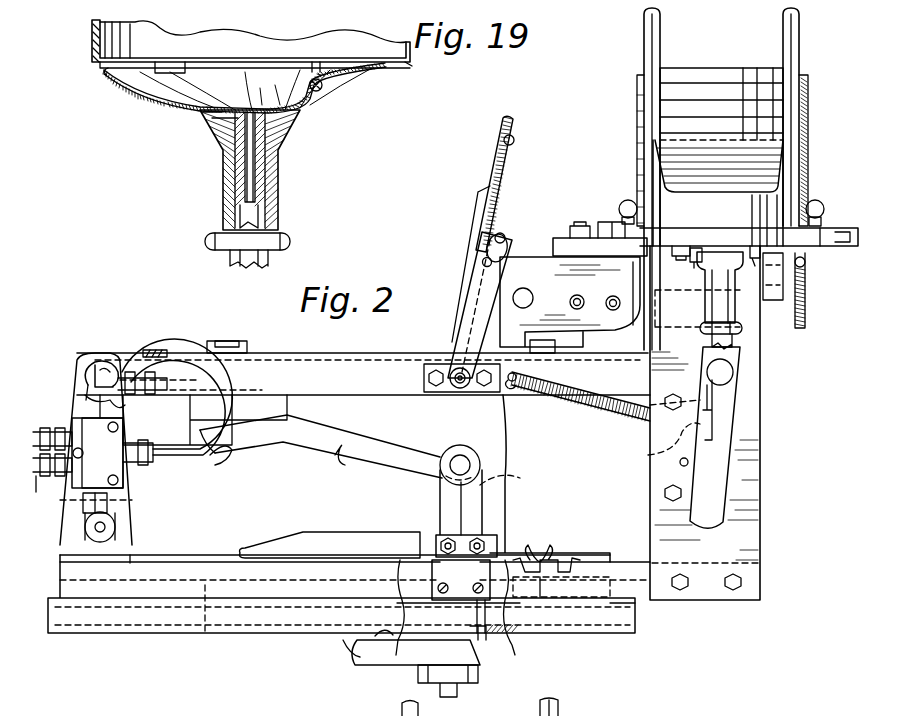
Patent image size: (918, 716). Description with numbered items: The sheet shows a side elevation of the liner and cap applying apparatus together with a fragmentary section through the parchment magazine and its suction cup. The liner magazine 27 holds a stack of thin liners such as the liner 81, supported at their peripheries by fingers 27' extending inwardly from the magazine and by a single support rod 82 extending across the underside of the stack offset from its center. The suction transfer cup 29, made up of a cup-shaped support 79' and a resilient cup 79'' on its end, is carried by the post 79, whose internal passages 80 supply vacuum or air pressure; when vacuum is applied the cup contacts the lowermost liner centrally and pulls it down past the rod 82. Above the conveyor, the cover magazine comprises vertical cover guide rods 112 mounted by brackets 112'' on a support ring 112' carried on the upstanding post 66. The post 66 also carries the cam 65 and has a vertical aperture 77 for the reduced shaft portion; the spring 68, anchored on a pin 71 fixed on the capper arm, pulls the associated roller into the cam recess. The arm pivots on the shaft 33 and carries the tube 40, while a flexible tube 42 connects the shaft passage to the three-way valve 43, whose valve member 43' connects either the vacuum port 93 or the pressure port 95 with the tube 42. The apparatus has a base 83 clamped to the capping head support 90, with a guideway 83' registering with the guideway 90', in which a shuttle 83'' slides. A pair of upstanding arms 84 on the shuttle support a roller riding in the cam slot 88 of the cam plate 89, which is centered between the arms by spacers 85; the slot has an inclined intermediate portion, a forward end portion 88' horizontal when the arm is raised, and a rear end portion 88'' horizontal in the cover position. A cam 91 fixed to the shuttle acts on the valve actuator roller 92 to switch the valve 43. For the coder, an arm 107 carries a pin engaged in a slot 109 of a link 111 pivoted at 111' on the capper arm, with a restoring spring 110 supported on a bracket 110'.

In FIG. 19, the liner magazine 27 is at (225, 48).
In FIG. 2, the liner magazine 27 is at (686, 157).
In FIG. 19, the fingers 27' is at (231, 84).
In FIG. 2, the fingers 27' is at (687, 238).
In FIG. 19, the liner 81 is at (128, 90).
In FIG. 2, the liner 81 is at (756, 254).
In FIG. 19, the support rod 82 is at (322, 89).
In FIG. 2, the support rod 82 is at (691, 256).
In FIG. 19, the suction transfer cup 29 is at (295, 128).
In FIG. 2, the suction transfer cup 29 is at (700, 276).
In FIG. 19, the post 79 is at (290, 170).
In FIG. 19, the cup-shaped support 79' is at (204, 141).
In FIG. 19, the resilient cup 79'' is at (176, 124).
In FIG. 19, the internal passages 80 is at (247, 190).
In FIG. 2, the cover guide rods 112 is at (721, 179).
In FIG. 2, the support ring 112' is at (705, 264).
In FIG. 2, the brackets 112'' is at (748, 151).
In FIG. 2, the upstanding post 66 is at (755, 490).
In FIG. 2, the cam 65 is at (715, 437).
In FIG. 2, the vertical aperture 77 is at (732, 413).
In FIG. 2, the arm 107 is at (533, 270).
In FIG. 2, the restoring spring 110 is at (510, 184).
In FIG. 2, the bracket 110' is at (458, 258).
In FIG. 2, the slot 109 is at (500, 243).
In FIG. 2, the link 111 is at (471, 305).
In FIG. 2, the pivot 111' is at (447, 357).
In FIG. 2, the spring 68 is at (623, 403).
In FIG. 2, the pin 71 is at (509, 384).
In FIG. 2, the tube 40 is at (260, 384).
In FIG. 2, the cam plate 89 is at (504, 416).
In FIG. 2, the spacers 85 is at (453, 445).
In FIG. 2, the cam slot 88 is at (321, 461).
In FIG. 2, the forward end portion 88' is at (515, 472).
In FIG. 2, the rear end portion 88'' is at (218, 473).
In FIG. 2, the upstanding arms 84 is at (482, 506).
In FIG. 2, the base 83 is at (344, 554).
In FIG. 2, the guideway 83' is at (341, 578).
In FIG. 2, the shuttle 83'' is at (436, 581).
In FIG. 2, the cam 91 is at (278, 537).
In FIG. 2, the capping head support 90 is at (445, 671).
In FIG. 2, the guideway 90' is at (652, 618).
In FIG. 2, the three-way valve 43 is at (113, 449).
In FIG. 2, the valve member 43' is at (82, 516).
In FIG. 2, the vacuum inlet port 93 is at (44, 430).
In FIG. 2, the pressure inlet port 95 is at (52, 482).
In FIG. 2, the valve actuator roller 92 is at (116, 529).
In FIG. 2, the shaft 33 is at (92, 357).
In FIG. 2, the flexible tube 42 is at (174, 332).